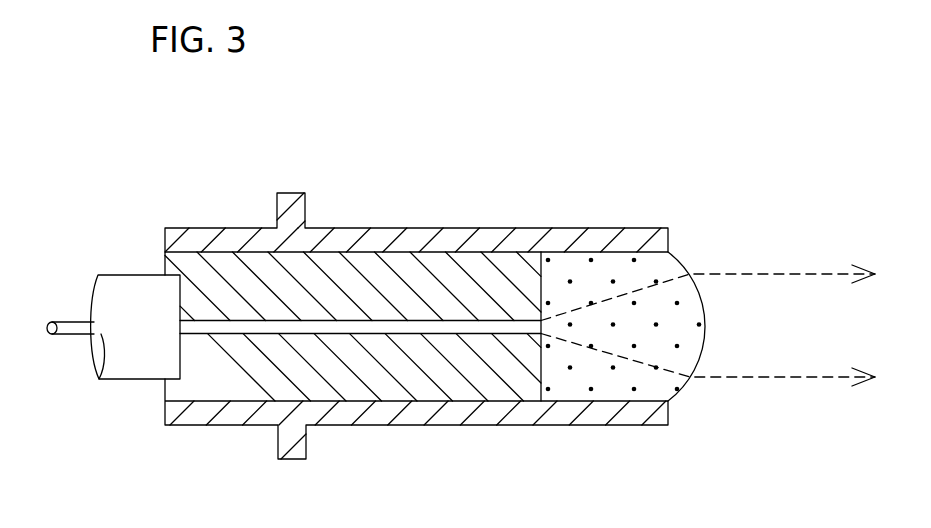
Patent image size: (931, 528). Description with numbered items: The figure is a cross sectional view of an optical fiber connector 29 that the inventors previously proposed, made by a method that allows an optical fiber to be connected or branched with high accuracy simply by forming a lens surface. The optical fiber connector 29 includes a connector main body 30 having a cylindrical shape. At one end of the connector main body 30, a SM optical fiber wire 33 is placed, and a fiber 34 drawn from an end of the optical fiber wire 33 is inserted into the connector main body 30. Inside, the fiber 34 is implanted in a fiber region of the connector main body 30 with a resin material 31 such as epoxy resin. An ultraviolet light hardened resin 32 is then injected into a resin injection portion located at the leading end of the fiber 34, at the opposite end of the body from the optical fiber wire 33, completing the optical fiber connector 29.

The optical fiber connector 29 is at (94, 214).
The connector main body 30 is at (400, 228).
The resin material 31 is at (228, 275).
The ultraviolet light hardened resin 32 is at (615, 264).
The SM optical fiber wire 33 is at (130, 367).
The fiber 34 is at (435, 327).